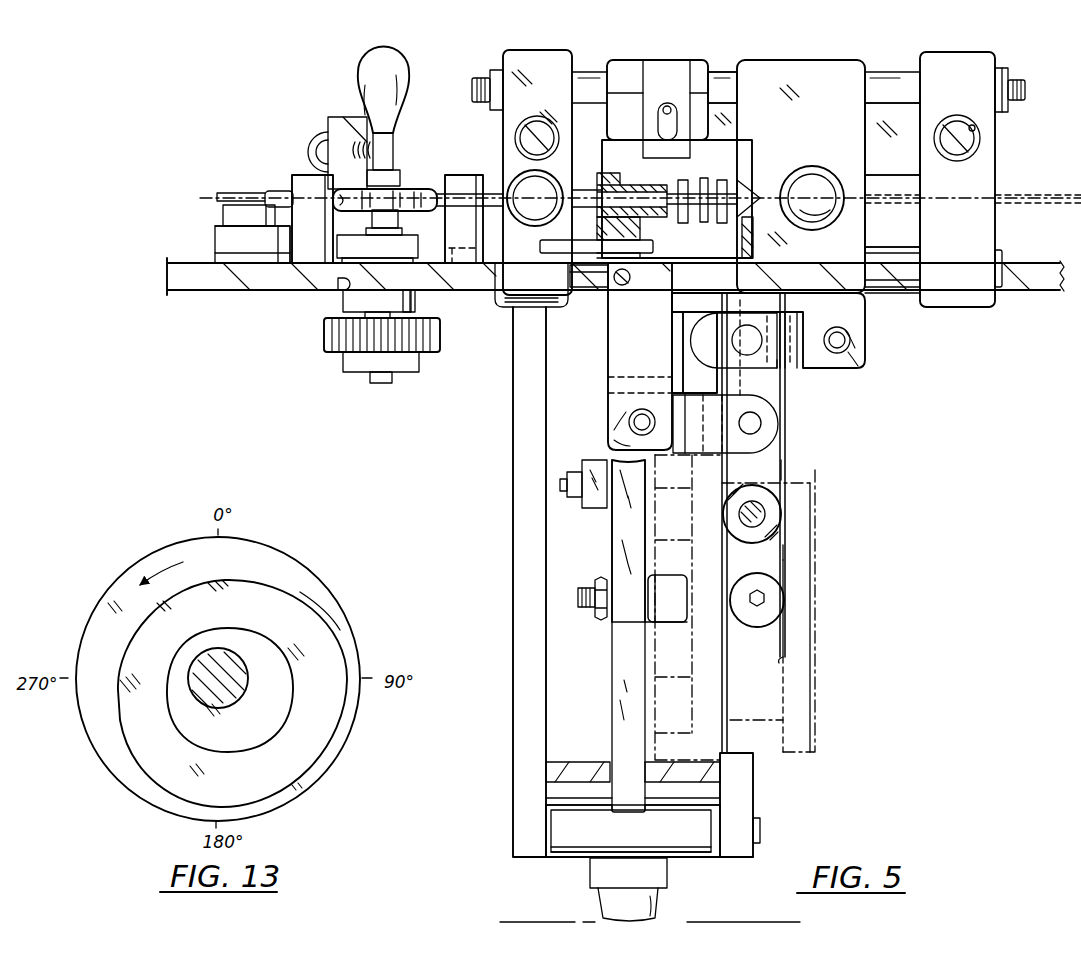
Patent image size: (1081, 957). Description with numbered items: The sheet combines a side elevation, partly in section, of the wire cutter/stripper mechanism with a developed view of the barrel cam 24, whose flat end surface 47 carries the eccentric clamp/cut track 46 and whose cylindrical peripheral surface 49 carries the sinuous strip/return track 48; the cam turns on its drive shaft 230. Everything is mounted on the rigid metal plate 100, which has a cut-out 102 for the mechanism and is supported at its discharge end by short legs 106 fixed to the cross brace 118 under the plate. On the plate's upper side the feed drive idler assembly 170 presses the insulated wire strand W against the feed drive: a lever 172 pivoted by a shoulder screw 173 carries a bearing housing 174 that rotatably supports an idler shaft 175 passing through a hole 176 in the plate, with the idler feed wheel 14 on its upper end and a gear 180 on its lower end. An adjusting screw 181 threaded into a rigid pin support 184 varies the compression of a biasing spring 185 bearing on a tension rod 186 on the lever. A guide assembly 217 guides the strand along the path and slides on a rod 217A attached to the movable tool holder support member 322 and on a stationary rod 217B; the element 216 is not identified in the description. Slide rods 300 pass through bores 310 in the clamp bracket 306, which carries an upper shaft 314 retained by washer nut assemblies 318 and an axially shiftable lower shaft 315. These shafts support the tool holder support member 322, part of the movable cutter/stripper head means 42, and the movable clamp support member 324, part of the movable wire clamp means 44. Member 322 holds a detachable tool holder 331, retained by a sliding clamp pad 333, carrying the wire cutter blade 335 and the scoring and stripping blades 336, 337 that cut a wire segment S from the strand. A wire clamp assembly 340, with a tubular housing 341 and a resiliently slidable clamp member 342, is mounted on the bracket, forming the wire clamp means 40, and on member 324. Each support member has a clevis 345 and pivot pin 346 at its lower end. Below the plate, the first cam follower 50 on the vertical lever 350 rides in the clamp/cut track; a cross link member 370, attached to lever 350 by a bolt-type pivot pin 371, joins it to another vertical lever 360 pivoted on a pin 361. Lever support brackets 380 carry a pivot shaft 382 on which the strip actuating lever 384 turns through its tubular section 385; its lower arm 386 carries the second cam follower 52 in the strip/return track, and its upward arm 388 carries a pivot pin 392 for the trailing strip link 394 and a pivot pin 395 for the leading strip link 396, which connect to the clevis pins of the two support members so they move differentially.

In FIG. 5, the idler feed wheel 14 is at (403, 188).
In FIG. 5, the barrel cam 24 is at (812, 737).
In FIG. 13, the barrel cam 24 is at (297, 556).
In FIG. 5, the wire clamp means 40 is at (548, 50).
In FIG. 5, the movable cutter/stripper head means 42 is at (637, 72).
In FIG. 5, the movable wire clamp means 44 is at (815, 60).
In FIG. 5, the eccentric clamp/cut track 46 is at (655, 720).
In FIG. 13, the eccentric clamp/cut track 46 is at (322, 616).
In FIG. 5, the flat end surface 47 is at (655, 690).
In FIG. 13, the flat end surface 47 is at (310, 581).
In FIG. 5, the sinuous strip/return track 48 is at (783, 662).
In FIG. 13, the cylindrical peripheral surface 49 is at (338, 600).
In FIG. 5, the first roller-type cam follower 50 is at (664, 624).
In FIG. 5, the second roller-type cam follower 52 is at (778, 588).
In FIG. 5, the rigid metal plate 100 is at (168, 282).
In FIG. 5, the cut-out 102 is at (572, 306).
In FIG. 5, the short legs 106 is at (665, 882).
In FIG. 5, the rigid cross brace 118 is at (702, 772).
In FIG. 5, the feed drive idler assembly 170 is at (208, 234).
In FIG. 5, the lever 172 is at (214, 247).
In FIG. 5, the shoulder screw 173 is at (224, 212).
In FIG. 5, the bearing housing 174 is at (342, 304).
In FIG. 5, the idler shaft 175 is at (384, 384).
In FIG. 5, the hole 176 is at (338, 288).
In FIG. 5, the gear 180 is at (323, 345).
In FIG. 5, the rotatable adjusting screw 181 is at (311, 140).
In FIG. 5, the rigid pin support 184 is at (347, 116).
In FIG. 5, the biasing spring 185 is at (355, 144).
In FIG. 5, the tension rod 186 is at (383, 50).
In FIG. 5, the support post 216 is at (292, 175).
In FIG. 5, the guide assembly 217 is at (628, 190).
In FIG. 5, the rod 217A is at (630, 284).
In FIG. 5, the stationary rod 217B is at (650, 253).
In FIG. 13, the drive shaft 230 is at (234, 693).
In FIG. 5, the slide rods 300 is at (522, 128).
In FIG. 5, the clamp bracket 306 is at (900, 103).
In FIG. 5, the bore 310 is at (546, 118).
In FIG. 5, the upper shaft 314 is at (882, 72).
In FIG. 5, the lower shaft 315 is at (888, 251).
In FIG. 5, the washer nut assemblies 318 is at (473, 78).
In FIG. 5, the movable tool holder support member 322 is at (705, 62).
In FIG. 5, the movable clamp support member 324 is at (780, 60).
In FIG. 5, the detachable tool holder 331 is at (748, 142).
In FIG. 5, the sliding clamp pad 333 is at (660, 127).
In FIG. 5, the wire cutter blade 335 is at (700, 182).
In FIG. 5, the insulation scoring and stripping blade 336 is at (753, 224).
In FIG. 5, the insulation scoring and stripping blade 337 is at (704, 222).
In FIG. 5, the wire clamp assembly 340 is at (528, 214).
In FIG. 5, the tubular housing 341 is at (824, 178).
In FIG. 5, the cylindrical clamp member 342 is at (818, 218).
In FIG. 5, the clevis 345 is at (608, 360).
In FIG. 5, the pivot pin 346 is at (630, 421).
In FIG. 5, the vertical lever 350 is at (616, 541).
In FIG. 5, the vertical lever 360 is at (612, 749).
In FIG. 5, the pin 361 is at (761, 830).
In FIG. 5, the cross link member 370 is at (590, 508).
In FIG. 5, the pivot pin 371 is at (560, 484).
In FIG. 5, the lever support brackets 380 is at (788, 394).
In FIG. 5, the pivot shaft 382 is at (764, 518).
In FIG. 5, the strip actuating lever 384 is at (783, 470).
In FIG. 5, the tubular section 385 is at (770, 502).
In FIG. 5, the lower arm 386 is at (786, 552).
In FIG. 5, the arm 388 is at (782, 444).
In FIG. 5, the pivot pin 392 is at (761, 423).
In FIG. 5, the trailing strip link 394 is at (698, 395).
In FIG. 5, the pivot pin 395 is at (740, 337).
In FIG. 5, the leading strip link 396 is at (793, 368).
In FIG. 5, the wire segment S is at (1072, 200).
In FIG. 5, the insulated wire strand W is at (262, 194).